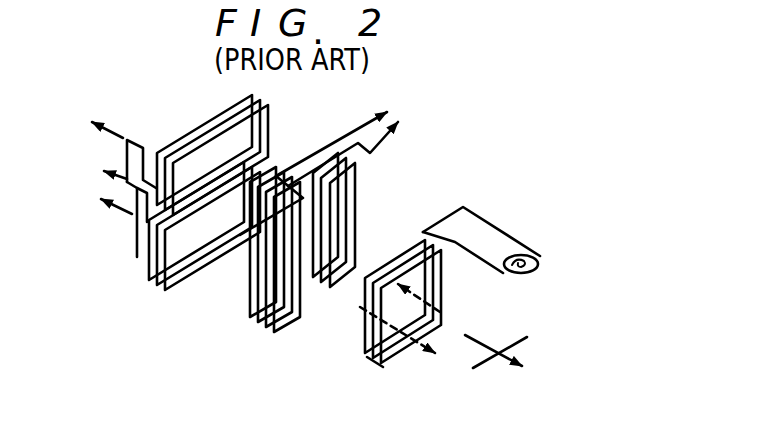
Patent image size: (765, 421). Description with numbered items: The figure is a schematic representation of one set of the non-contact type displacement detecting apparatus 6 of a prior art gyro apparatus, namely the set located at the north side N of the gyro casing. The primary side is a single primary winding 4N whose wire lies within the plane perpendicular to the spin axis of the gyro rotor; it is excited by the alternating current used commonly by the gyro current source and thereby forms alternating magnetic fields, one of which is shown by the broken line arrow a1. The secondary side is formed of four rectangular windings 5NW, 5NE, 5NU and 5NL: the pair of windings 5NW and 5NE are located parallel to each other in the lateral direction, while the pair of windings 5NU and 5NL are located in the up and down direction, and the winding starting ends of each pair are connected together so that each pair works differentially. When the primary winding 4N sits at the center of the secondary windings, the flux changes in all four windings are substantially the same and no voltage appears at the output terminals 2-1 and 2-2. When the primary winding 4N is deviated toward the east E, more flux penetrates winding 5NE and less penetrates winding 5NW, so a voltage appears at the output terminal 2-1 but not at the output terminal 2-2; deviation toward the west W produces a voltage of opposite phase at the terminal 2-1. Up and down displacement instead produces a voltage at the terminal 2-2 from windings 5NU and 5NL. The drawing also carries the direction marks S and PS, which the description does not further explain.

The non-contact type displacement detecting apparatus 6 is at (548, 79).
The north side N is at (93, 117).
The output terminal 2-2 is at (143, 220).
The output terminal 2-1 is at (402, 118).
The secondary winding 5NU is at (262, 102).
The secondary winding 5NL is at (168, 291).
The secondary winding 5NW is at (269, 321).
The secondary winding 5NE is at (370, 266).
The primary winding 4N is at (380, 346).
The alternate magnetic field a1 is at (457, 317).
The pick-up sensor PS is at (537, 268).
The east direction E is at (507, 344).
The south direction S is at (506, 363).
The west direction W is at (455, 381).